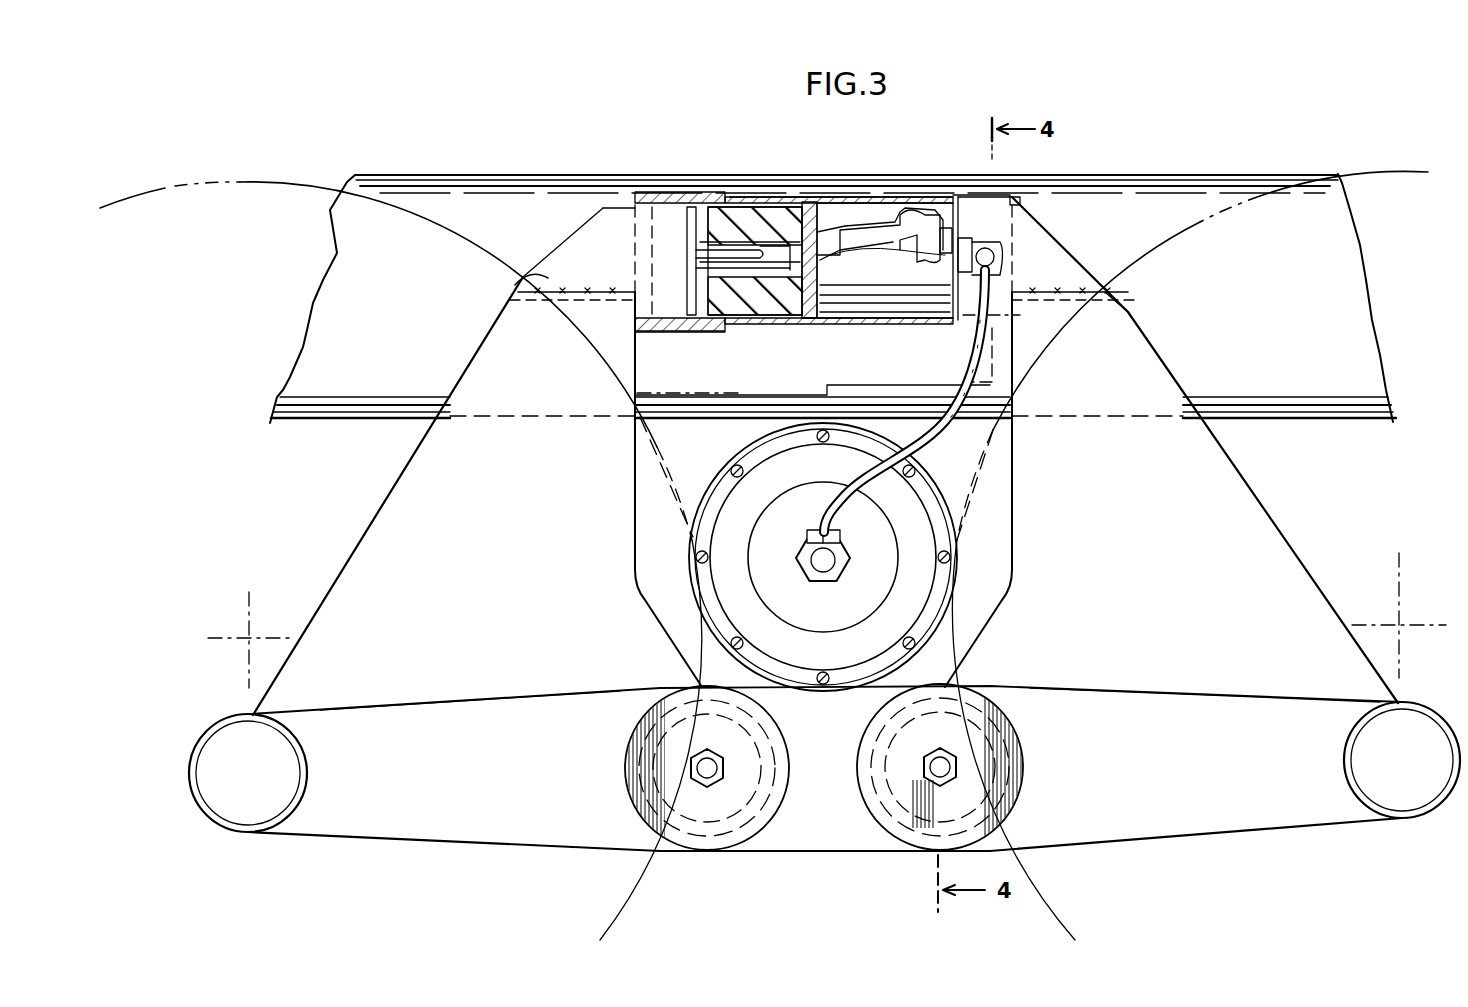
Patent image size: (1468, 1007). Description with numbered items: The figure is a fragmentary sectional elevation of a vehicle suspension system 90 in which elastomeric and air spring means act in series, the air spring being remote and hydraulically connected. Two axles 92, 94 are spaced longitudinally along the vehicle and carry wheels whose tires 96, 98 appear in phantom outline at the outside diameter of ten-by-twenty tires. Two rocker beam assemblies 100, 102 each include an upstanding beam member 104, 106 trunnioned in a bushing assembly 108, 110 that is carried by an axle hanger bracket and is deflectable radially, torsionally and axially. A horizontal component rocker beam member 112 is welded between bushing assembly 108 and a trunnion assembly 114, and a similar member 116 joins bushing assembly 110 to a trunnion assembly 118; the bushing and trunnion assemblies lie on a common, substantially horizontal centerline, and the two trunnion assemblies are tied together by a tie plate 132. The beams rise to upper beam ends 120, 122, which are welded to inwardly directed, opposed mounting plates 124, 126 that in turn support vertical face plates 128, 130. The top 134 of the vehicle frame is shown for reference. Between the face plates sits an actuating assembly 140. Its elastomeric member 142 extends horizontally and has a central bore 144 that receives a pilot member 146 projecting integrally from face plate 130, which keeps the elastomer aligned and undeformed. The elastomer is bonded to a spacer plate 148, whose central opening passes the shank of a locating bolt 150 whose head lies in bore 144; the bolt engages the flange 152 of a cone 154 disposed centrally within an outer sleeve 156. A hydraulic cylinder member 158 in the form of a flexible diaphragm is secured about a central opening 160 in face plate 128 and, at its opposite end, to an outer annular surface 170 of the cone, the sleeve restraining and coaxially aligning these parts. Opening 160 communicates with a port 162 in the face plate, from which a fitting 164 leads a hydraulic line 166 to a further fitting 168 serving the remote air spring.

The suspension system 90 is at (632, 162).
The axle 92 is at (1400, 625).
The axle 94 is at (247, 638).
The tire 96 is at (1393, 170).
The tire 98 is at (135, 197).
The rocker beam assembly 100 is at (1268, 490).
The rocker beam assembly 102 is at (598, 215).
The beam member 104 is at (1158, 547).
The beam member 106 is at (615, 477).
The bushing assembly 108 is at (1405, 700).
The bushing assembly 110 is at (238, 706).
The horizontal component rocker beam member 112 is at (1160, 700).
The trunnion assembly 114 is at (1000, 690).
The horizontal component rocker beam member 116 is at (470, 700).
The trunnion assembly 118 is at (662, 679).
The upper beam end 120 is at (1115, 313).
The upper beam end 122 is at (527, 277).
The mounting plate 124 is at (1040, 232).
The mounting plate 126 is at (615, 242).
The face plate 128 is at (966, 246).
The face plate 130 is at (690, 228).
The tie plate 132 is at (842, 739).
The top of vehicle frame 134 is at (1178, 173).
The actuating assembly 140 is at (935, 190).
The elastomeric member 142 is at (705, 195).
The central bore 144 is at (755, 282).
The pilot member 146 is at (745, 258).
The spacer plate 148 is at (810, 200).
The locating bolt 150 is at (762, 328).
The flange 152 is at (810, 205).
The cone 154 is at (897, 262).
The outer sleeve 156 is at (770, 196).
The hydraulic cylinder member 158 is at (905, 206).
The central opening 160 is at (958, 232).
The port 162 is at (990, 287).
The fitting 164 is at (1005, 260).
The hydraulic line 166 is at (965, 348).
The fitting 168 is at (843, 553).
The outer annular surface 170 is at (825, 285).